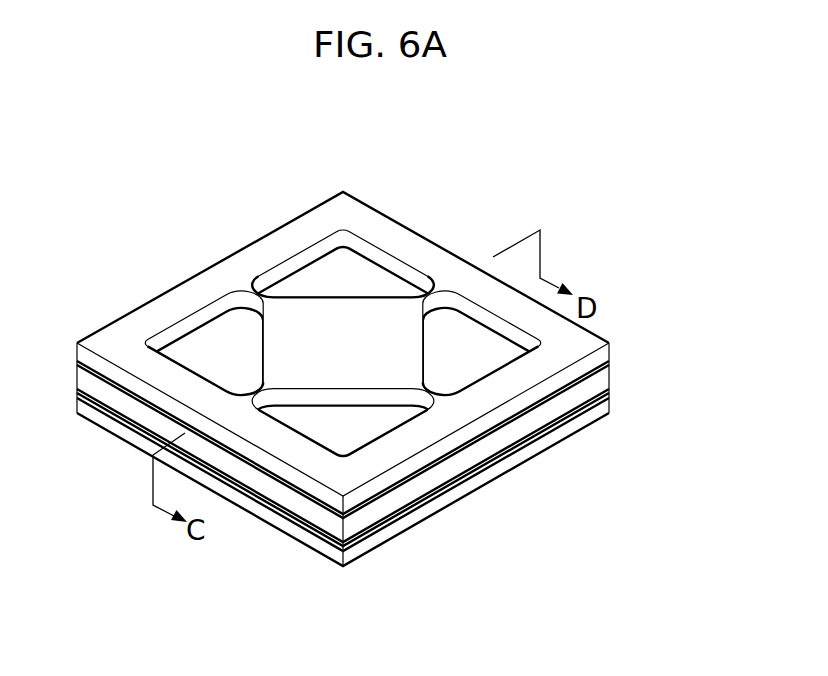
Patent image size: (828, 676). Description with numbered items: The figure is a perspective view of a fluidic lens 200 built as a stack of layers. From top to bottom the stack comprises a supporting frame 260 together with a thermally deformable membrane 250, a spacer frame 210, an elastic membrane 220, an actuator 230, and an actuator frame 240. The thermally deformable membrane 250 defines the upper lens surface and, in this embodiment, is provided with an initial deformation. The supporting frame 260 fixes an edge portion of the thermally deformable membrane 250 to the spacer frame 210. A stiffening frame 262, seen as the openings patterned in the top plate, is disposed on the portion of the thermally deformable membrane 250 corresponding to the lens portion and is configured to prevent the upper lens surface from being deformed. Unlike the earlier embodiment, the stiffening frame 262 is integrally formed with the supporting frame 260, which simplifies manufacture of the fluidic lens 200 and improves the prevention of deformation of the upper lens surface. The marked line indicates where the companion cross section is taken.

The fluidic lens 200 is at (385, 365).
The spacer frame 210 is at (602, 380).
The elastic membrane 220 is at (606, 391).
The actuator 230 is at (608, 406).
The actuator frame 240 is at (577, 425).
The thermally deformable membrane 250 is at (612, 362).
The supporting frame 260 is at (343, 339).
The stiffening frame 262 is at (345, 327).